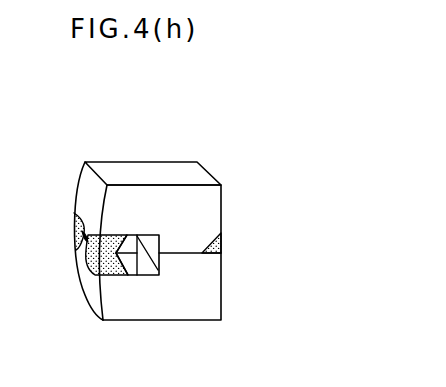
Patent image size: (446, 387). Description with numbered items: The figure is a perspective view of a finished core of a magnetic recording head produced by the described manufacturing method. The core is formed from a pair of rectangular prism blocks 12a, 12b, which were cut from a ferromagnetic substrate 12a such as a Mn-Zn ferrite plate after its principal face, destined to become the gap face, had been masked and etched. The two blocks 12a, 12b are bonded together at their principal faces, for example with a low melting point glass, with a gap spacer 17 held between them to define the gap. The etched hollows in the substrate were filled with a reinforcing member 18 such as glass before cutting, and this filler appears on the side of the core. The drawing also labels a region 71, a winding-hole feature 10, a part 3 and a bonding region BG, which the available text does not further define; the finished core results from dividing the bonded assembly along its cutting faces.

The rectangle prism block 12b is at (85, 182).
The ferromagnetic substrate 12a is at (85, 292).
The reinforcing member 18 is at (74, 225).
The gap spacer 17 is at (82, 236).
The bonding material 71 is at (87, 256).
The crystal block 10 is at (131, 250).
The groove 3 is at (222, 249).
The bonding glass BG is at (187, 253).